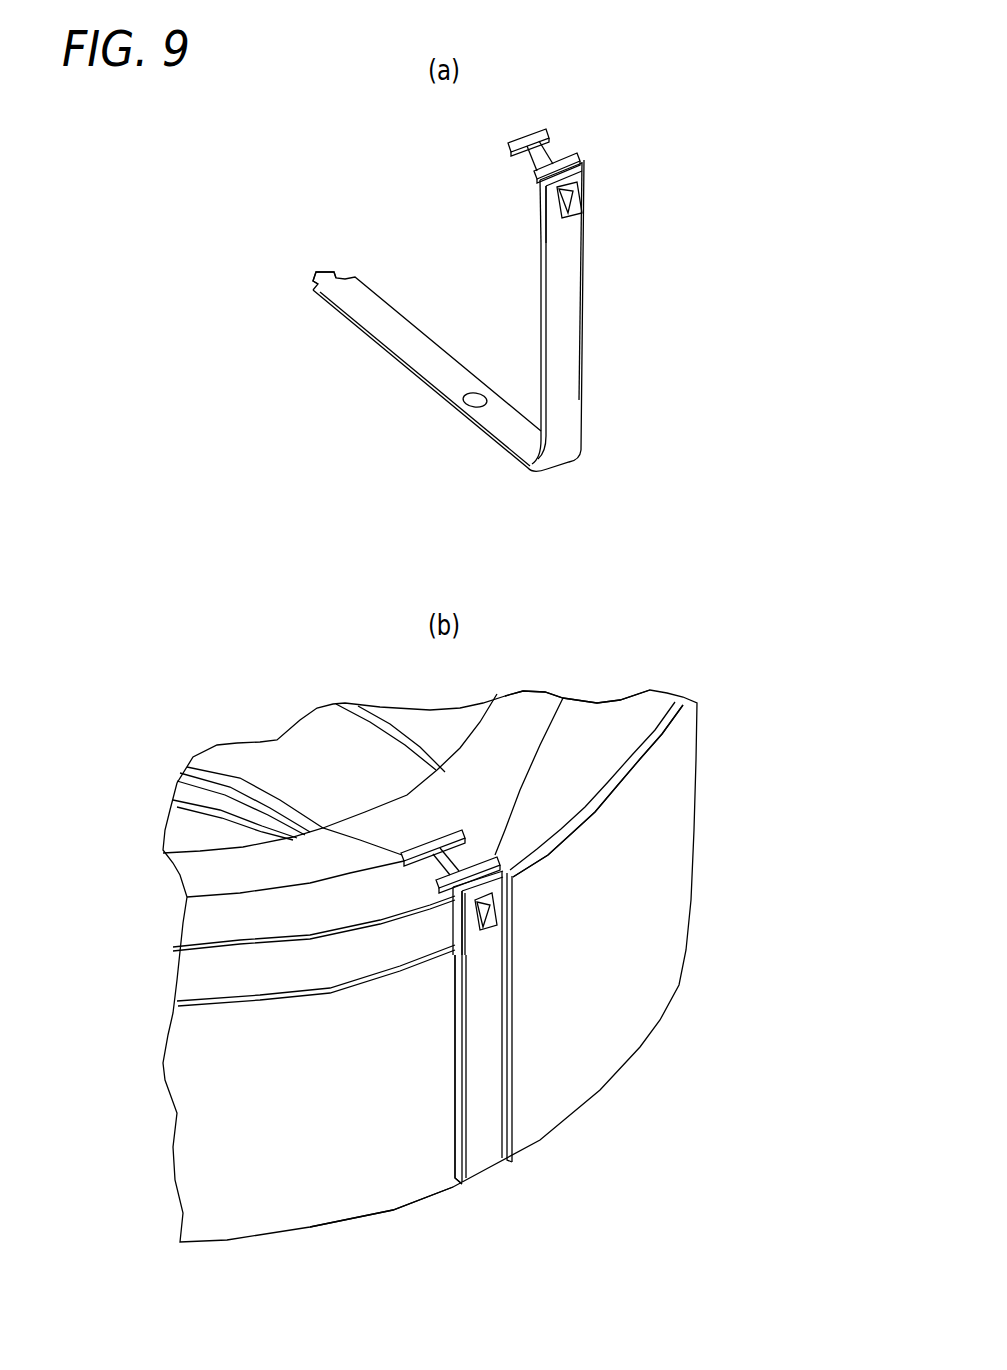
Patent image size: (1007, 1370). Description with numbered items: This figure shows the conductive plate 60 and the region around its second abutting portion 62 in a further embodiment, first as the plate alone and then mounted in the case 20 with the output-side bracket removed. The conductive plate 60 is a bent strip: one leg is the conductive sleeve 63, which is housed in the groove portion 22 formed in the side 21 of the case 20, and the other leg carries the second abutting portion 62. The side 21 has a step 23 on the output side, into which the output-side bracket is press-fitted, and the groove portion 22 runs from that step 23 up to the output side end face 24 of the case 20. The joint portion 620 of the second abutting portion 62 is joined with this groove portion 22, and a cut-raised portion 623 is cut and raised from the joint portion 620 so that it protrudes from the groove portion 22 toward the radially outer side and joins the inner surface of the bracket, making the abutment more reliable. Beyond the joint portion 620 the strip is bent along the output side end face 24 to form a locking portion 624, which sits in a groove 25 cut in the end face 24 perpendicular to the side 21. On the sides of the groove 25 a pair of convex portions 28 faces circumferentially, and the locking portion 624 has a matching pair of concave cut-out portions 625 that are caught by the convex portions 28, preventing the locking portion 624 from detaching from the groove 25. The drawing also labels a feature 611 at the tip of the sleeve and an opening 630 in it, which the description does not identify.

The case 20 is at (452, 946).
The side 21 is at (613, 1045).
The groove portion 22 is at (512, 922).
The step 23 is at (640, 792).
The output side end face 24 is at (610, 748).
The groove 25 is at (513, 877).
The pair of convex portions 28 is at (478, 842).
The conductive plate 60 is at (444, 694).
The second abutting portion 62 is at (585, 159).
The conductive sleeve 63 is at (495, 424).
The tip notch 611 is at (320, 273).
The joint portion 620 is at (545, 205).
The cut-raised portion 623 is at (572, 207).
The locking portion 624 is at (530, 144).
The pair of cut-out portions 625 is at (550, 137).
The hole 630 is at (463, 402).